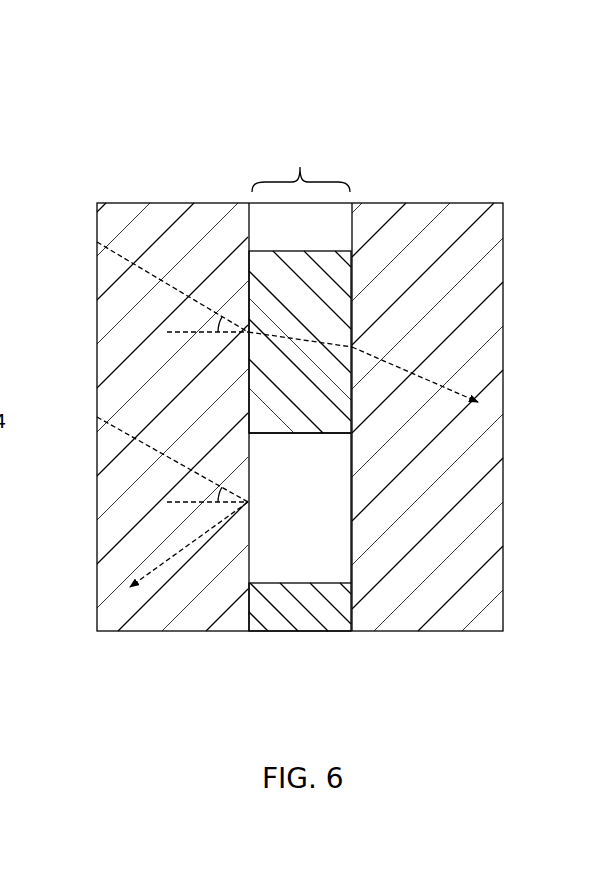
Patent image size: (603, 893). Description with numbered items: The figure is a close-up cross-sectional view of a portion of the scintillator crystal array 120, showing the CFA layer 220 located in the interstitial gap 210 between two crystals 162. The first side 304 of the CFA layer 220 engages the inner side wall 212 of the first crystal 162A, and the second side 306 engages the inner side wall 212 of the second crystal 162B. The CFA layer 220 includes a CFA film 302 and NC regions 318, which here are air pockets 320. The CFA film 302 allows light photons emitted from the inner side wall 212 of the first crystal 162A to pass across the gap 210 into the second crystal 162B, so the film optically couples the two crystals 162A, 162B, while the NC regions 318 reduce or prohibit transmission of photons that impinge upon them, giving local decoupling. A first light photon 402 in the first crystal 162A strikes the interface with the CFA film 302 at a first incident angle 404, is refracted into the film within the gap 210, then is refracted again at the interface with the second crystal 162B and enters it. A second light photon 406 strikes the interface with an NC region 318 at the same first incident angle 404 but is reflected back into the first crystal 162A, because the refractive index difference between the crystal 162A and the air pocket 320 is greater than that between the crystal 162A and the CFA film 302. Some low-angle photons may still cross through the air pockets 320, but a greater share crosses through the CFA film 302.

The scintillator crystal array 120 is at (460, 107).
The crystals 162 is at (113, 202).
The first crystal 162A is at (158, 202).
The second crystal 162B is at (462, 203).
The interstitial gap 210 is at (352, 197).
The CFA layer 220 is at (301, 165).
The air pockets 320 is at (273, 209).
The NC regions 318 is at (352, 232).
The second side 306 is at (353, 302).
The CFA film 302 is at (333, 425).
The first side 304 is at (248, 352).
The inner side wall 212 is at (250, 560).
The first light photon 402 is at (455, 393).
The first incident angle 404 is at (218, 320).
The second light photon 406 is at (148, 565).